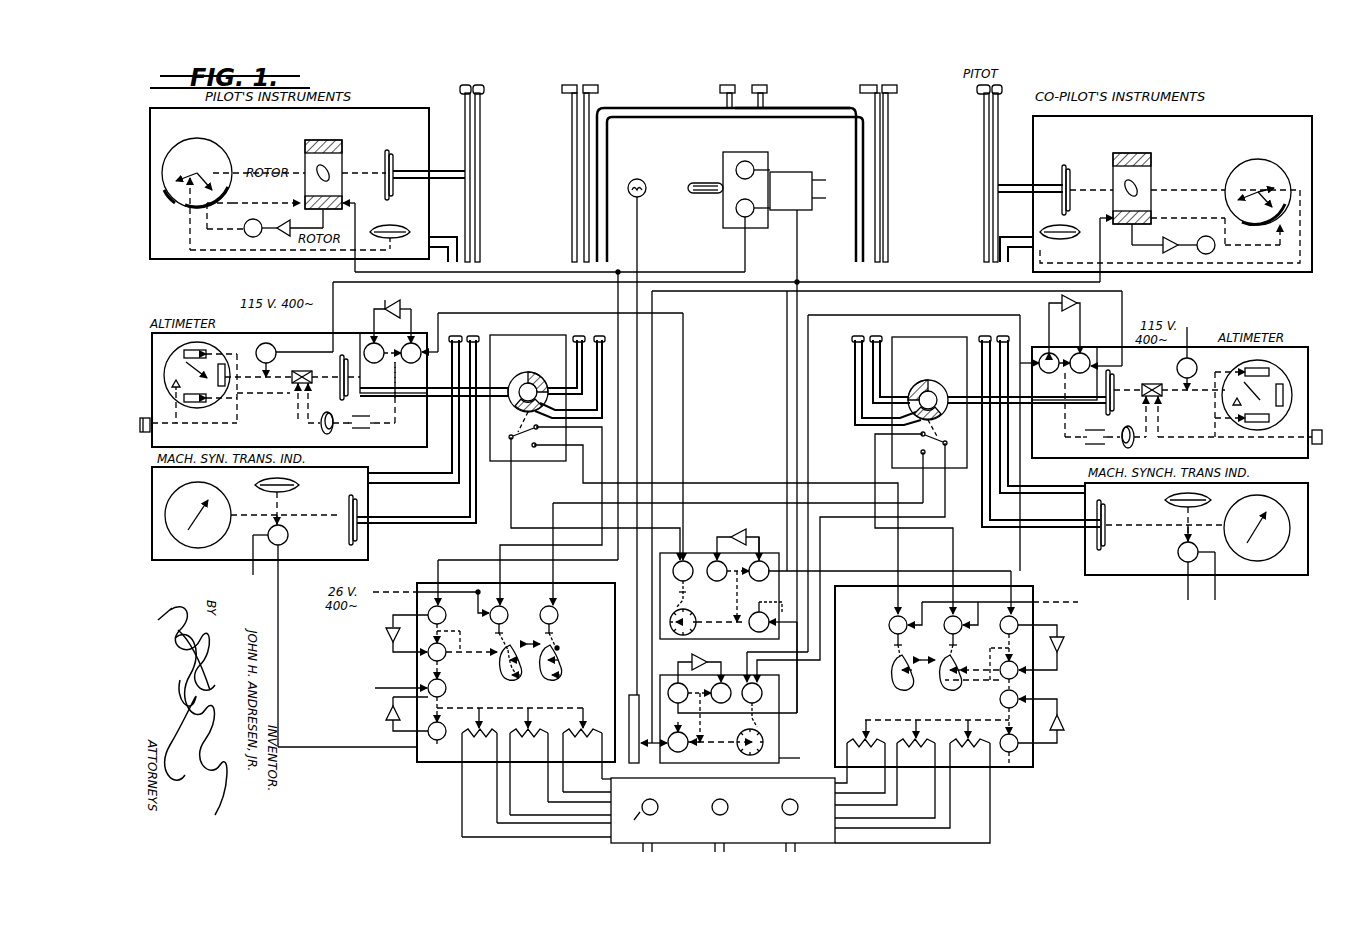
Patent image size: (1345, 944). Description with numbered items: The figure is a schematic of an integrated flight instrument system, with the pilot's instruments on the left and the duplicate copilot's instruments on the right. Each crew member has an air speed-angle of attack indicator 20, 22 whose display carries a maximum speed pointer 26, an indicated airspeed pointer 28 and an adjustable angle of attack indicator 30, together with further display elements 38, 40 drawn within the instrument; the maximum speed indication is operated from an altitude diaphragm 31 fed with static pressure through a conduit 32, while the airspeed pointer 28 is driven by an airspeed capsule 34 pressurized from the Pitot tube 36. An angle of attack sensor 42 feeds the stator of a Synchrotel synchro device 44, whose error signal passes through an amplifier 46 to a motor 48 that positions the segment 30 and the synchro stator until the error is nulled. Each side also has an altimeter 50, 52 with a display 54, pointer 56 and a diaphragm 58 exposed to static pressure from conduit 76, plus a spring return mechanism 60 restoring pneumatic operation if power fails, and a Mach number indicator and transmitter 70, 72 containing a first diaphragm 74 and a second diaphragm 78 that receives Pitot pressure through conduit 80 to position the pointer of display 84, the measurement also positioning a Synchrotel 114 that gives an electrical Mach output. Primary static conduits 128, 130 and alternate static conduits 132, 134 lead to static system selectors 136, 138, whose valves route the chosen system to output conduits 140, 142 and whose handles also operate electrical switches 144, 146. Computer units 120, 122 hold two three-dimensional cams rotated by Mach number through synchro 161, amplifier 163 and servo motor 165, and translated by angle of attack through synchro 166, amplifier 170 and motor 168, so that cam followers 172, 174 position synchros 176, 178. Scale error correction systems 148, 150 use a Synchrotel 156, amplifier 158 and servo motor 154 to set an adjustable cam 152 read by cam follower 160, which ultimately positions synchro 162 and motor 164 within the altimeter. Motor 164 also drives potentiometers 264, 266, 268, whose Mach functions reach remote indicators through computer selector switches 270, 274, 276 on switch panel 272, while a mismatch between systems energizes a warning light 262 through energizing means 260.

The air speed-angle of attack indicator 20 is at (202, 260).
The air speed-angle of attack indicator 22 is at (1228, 272).
The maximum speed pointer 26 is at (191, 165).
The indicated airspeed pointer 28 is at (206, 158).
The angle of attack indicator 30 is at (226, 190).
The altitude diaphragm 31 is at (396, 240).
The conduit 32 is at (442, 228).
The airspeed capsule 34 is at (395, 163).
The Pitot tube 36 is at (480, 143).
The index arc 38 is at (185, 210).
The connection 40 is at (207, 200).
The angle of attack sensor 42 is at (732, 228).
The synchro device 44 is at (343, 193).
The amplifier 46 is at (277, 236).
The motor 48 is at (244, 232).
The altimeter 50 is at (150, 432).
The altimeter 52 is at (1040, 460).
The display 54 is at (172, 398).
The altitude indicating pointer 56 is at (182, 365).
The diaphragm 58 is at (346, 352).
The spring return mechanism 60 is at (322, 430).
The Mach number indicator and transmitter 70 is at (170, 562).
The Mach number indicator and transmitter 72 is at (1280, 578).
The first diaphragm 74 is at (299, 483).
The conduit 76 is at (420, 476).
The second diaphragm 78 is at (338, 507).
The conduit 80 is at (430, 503).
The display 84 is at (240, 486).
The Synchrotel 114 is at (288, 538).
The computer unit 120 is at (417, 660).
The computer unit 122 is at (1033, 685).
The conduit 128 is at (572, 128).
The conduit 130 is at (888, 133).
The conduit 132 is at (620, 122).
The conduit 134 is at (792, 99).
The static system selector 136 is at (535, 462).
The static system selector 138 is at (955, 465).
The output static system conduit 140 is at (505, 400).
The output static system conduit 142 is at (950, 408).
The electrical switch 144 is at (512, 475).
The electrical switch 146 is at (937, 470).
The scale error correction system 148 is at (712, 680).
The scale error correction system 150 is at (779, 748).
The adjustable cam surface 152 is at (696, 629).
The servo motor 154 is at (725, 578).
The Synchrotel 156 is at (276, 346).
The amplifier 158 is at (740, 527).
The cam follower 160 is at (715, 606).
The synchro 161 is at (446, 728).
The synchro 162 is at (411, 363).
The amplifier 163 is at (386, 712).
The motor 164 is at (374, 363).
The servo motor 165 is at (396, 687).
The synchro 166 is at (446, 620).
The motor 168 is at (443, 658).
The amplifier 170 is at (386, 634).
The cam follower 172 is at (503, 636).
The cam follower 174 is at (554, 636).
The synchro 176 is at (545, 580).
The synchro 178 is at (556, 609).
The energizing means 260 is at (634, 765).
The warning light 262 is at (643, 196).
The potentiometer 264 is at (536, 772).
The potentiometer 266 is at (560, 761).
The potentiometer 268 is at (587, 750).
The computer selector switch 270 is at (656, 813).
The switch panel 272 is at (820, 778).
The switch 274 is at (726, 813).
The switch 276 is at (796, 813).